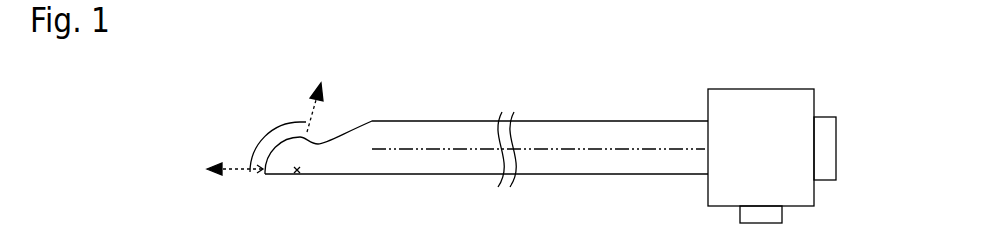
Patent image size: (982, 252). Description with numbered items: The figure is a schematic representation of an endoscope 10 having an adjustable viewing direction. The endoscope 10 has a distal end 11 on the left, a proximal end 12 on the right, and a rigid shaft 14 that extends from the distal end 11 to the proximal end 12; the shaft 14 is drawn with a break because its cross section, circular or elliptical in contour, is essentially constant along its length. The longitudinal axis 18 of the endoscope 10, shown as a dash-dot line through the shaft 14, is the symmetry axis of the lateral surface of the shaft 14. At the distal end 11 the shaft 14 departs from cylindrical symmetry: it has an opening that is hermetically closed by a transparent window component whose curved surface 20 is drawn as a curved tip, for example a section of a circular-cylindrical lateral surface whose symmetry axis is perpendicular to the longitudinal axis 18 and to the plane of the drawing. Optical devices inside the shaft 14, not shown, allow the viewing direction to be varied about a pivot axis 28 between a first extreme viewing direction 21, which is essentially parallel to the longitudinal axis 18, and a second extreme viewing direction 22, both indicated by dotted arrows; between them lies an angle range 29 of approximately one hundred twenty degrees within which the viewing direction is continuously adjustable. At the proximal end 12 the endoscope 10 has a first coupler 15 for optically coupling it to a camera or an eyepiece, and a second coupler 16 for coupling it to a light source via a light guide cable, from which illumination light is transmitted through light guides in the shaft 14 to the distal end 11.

The endoscope 10 is at (458, 62).
The distal end 11 is at (206, 62).
The proximal end 12 is at (714, 62).
The shaft 14 is at (588, 170).
The first coupler 15 is at (829, 176).
The second coupler 16 is at (742, 217).
The longitudinal axis 18 is at (445, 148).
The curved surface 20 is at (260, 171).
The first extreme viewing direction 21 is at (232, 173).
The second extreme viewing direction 22 is at (312, 110).
The pivot axis 28 is at (299, 175).
The angle range 29 is at (268, 131).